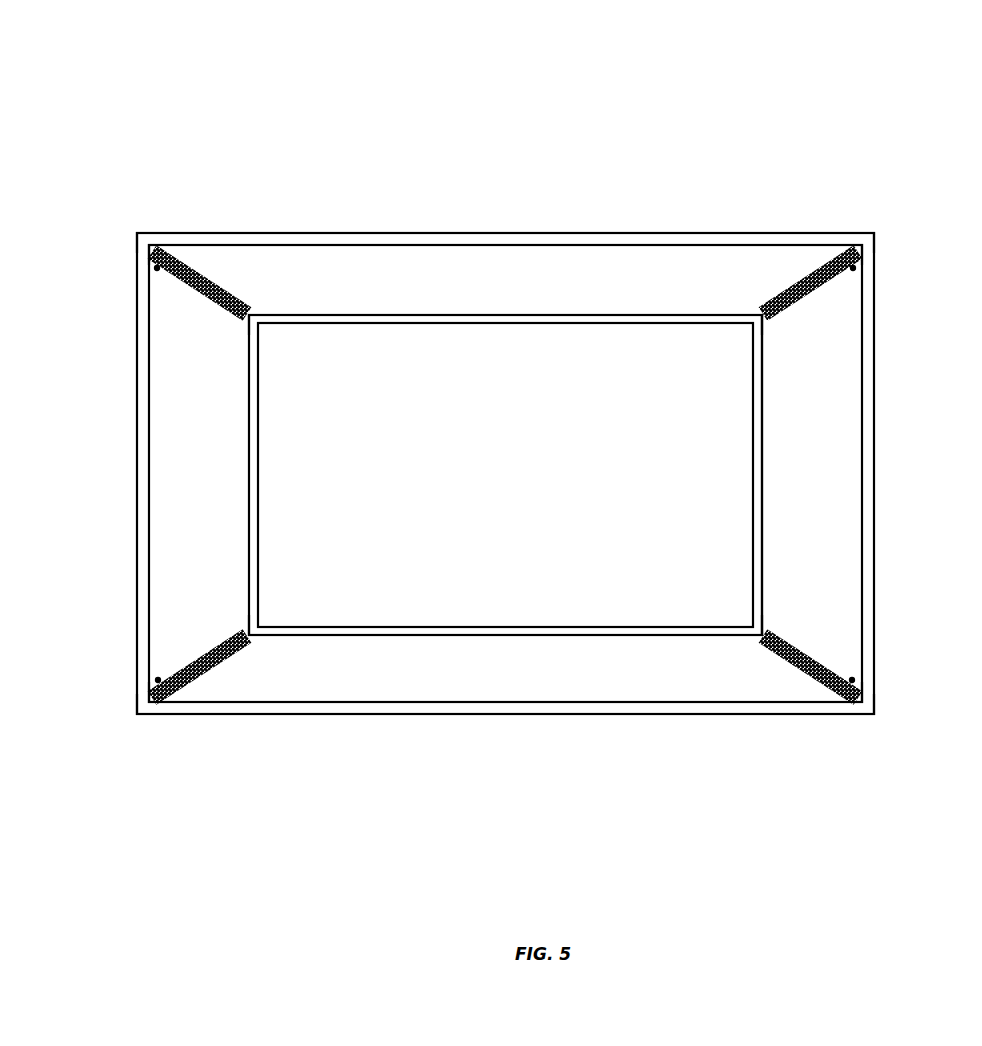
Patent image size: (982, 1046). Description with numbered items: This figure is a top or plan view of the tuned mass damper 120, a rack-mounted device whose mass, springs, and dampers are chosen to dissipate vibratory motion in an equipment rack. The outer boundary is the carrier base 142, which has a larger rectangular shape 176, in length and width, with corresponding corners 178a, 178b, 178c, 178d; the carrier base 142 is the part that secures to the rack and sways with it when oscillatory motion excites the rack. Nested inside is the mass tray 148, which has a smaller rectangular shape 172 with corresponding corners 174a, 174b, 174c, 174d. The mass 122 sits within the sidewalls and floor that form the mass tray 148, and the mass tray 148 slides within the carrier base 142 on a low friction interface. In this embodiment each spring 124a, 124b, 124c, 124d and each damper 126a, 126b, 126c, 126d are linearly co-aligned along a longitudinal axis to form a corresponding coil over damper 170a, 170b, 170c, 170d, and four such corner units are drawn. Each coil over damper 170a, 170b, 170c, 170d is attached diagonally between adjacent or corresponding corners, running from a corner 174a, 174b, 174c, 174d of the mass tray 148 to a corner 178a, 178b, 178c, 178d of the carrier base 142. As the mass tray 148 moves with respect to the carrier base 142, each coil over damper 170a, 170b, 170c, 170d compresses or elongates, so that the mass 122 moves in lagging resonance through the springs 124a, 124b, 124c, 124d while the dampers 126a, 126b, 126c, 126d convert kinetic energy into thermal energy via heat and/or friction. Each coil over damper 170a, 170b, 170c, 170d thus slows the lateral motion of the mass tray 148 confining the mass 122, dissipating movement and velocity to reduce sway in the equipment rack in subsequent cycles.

The tuned mass damper 120 is at (342, 123).
The mass 122 is at (515, 472).
The spring 124a is at (212, 260).
The spring 124b is at (800, 277).
The spring 124c is at (218, 665).
The spring 124d is at (802, 663).
The damper 126a is at (187, 276).
The damper 126b is at (830, 286).
The damper 126c is at (186, 667).
The damper 126d is at (843, 665).
The carrier base 142 is at (137, 477).
The mass tray 148 is at (763, 462).
The coil over damper 170a is at (172, 262).
The coil over damper 170b is at (840, 252).
The coil over damper 170c is at (173, 695).
The coil over damper 170d is at (850, 703).
The rectangular shape 172 is at (515, 312).
The corner 174a is at (245, 323).
The corner 174b is at (763, 328).
The corner 174c is at (243, 625).
The corner 174d is at (767, 623).
The larger rectangular shape 176 is at (482, 715).
The corner 178a is at (137, 244).
The corner 178b is at (875, 242).
The corner 178c is at (137, 705).
The corner 178d is at (877, 705).